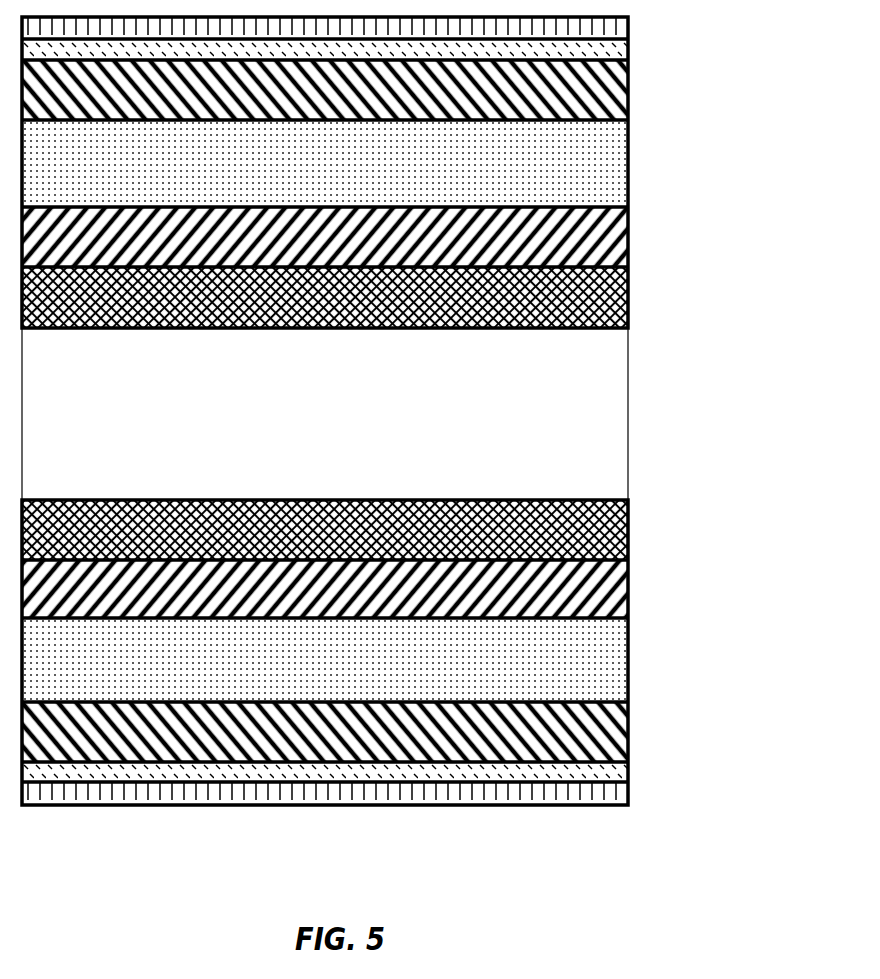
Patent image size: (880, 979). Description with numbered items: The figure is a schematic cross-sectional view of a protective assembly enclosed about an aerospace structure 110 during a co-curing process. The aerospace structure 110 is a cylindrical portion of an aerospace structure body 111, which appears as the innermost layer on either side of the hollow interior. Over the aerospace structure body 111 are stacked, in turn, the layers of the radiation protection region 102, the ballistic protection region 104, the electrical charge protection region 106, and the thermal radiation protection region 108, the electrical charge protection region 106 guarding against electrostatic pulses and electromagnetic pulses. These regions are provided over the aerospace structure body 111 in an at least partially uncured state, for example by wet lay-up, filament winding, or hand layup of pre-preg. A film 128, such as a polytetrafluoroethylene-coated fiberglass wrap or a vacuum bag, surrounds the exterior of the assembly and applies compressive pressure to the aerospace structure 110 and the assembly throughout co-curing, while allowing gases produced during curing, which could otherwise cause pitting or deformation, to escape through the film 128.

The radiation protection region 102 is at (628, 592).
The ballistic protection region 104 is at (628, 663).
The electrical charge protection region 106 is at (628, 718).
The thermal radiation protection region 108 is at (628, 768).
The aerospace structure 110 is at (636, 307).
The aerospace structure body 111 is at (628, 533).
The film 128 is at (142, 808).